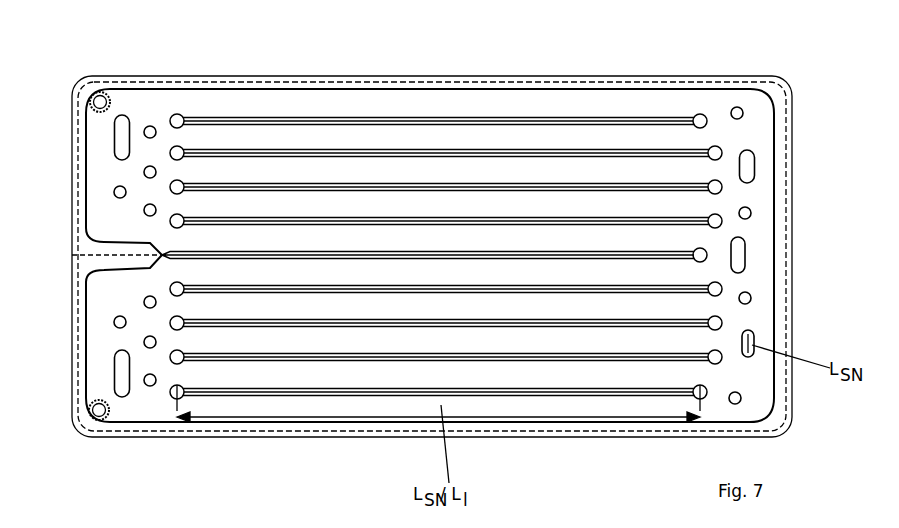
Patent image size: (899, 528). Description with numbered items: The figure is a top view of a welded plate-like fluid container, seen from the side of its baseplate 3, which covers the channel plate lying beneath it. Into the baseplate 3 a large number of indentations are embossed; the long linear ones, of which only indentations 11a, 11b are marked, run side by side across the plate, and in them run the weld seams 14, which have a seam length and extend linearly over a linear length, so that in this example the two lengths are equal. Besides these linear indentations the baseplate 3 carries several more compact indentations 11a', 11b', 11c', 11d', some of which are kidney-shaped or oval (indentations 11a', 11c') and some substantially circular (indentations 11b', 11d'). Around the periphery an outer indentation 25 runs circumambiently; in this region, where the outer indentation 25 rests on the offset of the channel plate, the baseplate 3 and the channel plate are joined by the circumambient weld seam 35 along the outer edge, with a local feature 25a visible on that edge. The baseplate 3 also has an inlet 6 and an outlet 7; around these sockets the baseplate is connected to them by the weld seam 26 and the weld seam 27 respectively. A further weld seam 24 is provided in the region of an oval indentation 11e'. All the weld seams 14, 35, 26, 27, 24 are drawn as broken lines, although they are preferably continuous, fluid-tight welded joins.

The baseplate 3 is at (146, 437).
The inlet 6 is at (97, 414).
The outlet 7 is at (98, 96).
The indentation 11a is at (438, 80).
The indentation 11b is at (446, 91).
The compact indentation 11a' is at (79, 141).
The compact indentation 11b' is at (167, 89).
The compact indentation 11c' is at (778, 264).
The compact indentation 11d' is at (787, 207).
The oval indentation 11e' is at (793, 388).
The weld seams 14 is at (542, 393).
The further weld seam 24 is at (756, 338).
The outer indentation 25 is at (669, 89).
The notch 25a is at (160, 256).
The weld seam 26 is at (90, 409).
The weld seam 27 is at (91, 101).
The weld seam 35 is at (723, 80).